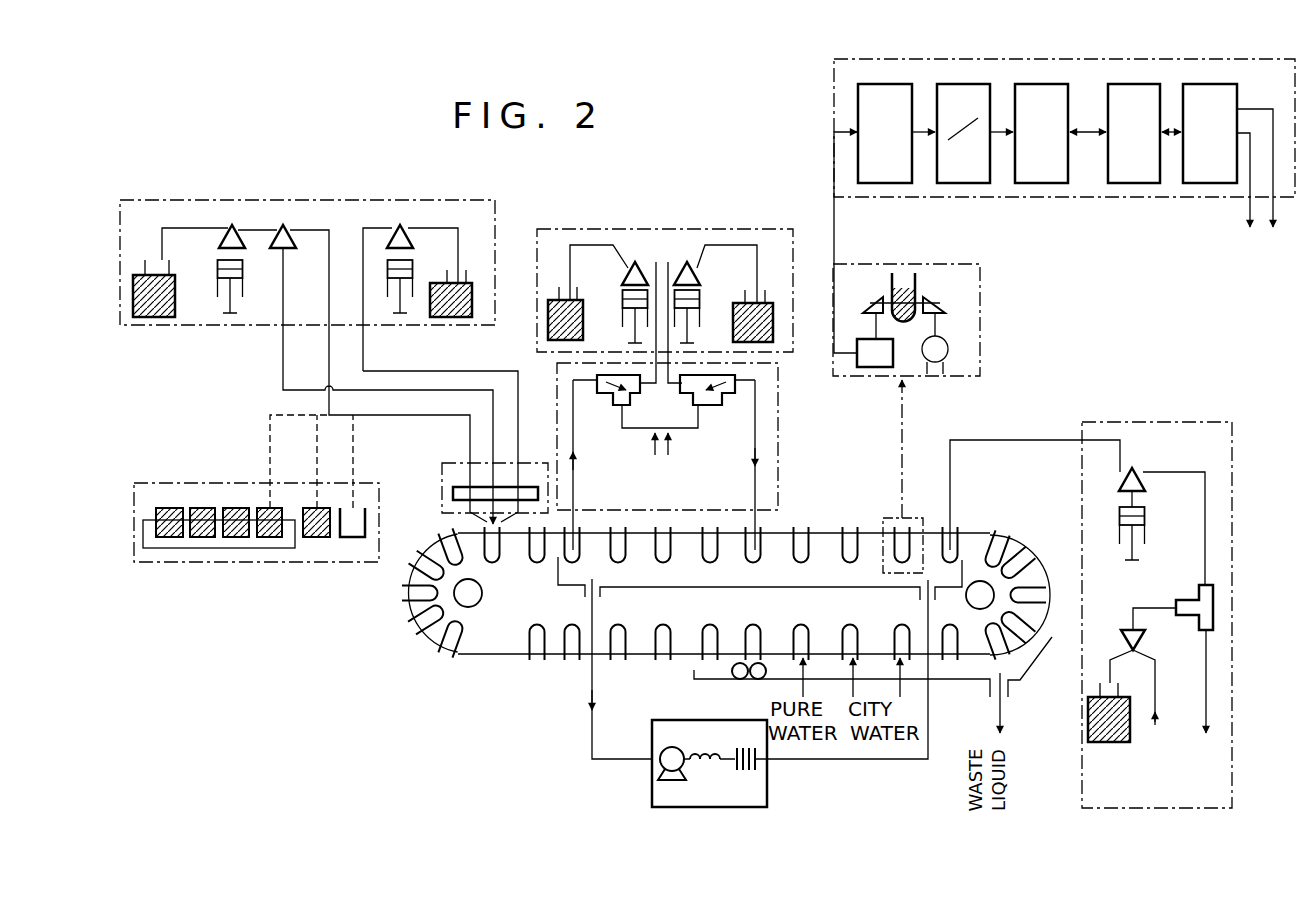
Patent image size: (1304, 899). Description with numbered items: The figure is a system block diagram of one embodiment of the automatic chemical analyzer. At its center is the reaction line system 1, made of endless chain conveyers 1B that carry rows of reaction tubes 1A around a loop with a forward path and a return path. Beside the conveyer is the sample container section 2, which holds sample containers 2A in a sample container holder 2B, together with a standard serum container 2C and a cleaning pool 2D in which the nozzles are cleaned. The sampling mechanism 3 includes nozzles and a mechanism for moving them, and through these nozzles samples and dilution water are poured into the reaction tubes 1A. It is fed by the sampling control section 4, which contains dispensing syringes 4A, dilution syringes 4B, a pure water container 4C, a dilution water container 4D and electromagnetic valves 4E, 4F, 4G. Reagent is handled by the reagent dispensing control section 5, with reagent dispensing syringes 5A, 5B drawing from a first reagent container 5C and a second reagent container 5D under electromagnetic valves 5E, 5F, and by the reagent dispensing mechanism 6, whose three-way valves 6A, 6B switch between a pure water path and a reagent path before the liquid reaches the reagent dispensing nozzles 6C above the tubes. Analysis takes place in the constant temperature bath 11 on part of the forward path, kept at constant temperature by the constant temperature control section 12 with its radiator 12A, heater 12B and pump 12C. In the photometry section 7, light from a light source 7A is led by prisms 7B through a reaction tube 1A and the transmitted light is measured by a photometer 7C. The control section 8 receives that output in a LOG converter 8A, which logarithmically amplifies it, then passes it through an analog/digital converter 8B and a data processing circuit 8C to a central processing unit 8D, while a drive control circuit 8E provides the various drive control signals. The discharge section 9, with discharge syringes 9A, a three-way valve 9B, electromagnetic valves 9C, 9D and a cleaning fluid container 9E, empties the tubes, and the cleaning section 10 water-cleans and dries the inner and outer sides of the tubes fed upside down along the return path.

The reaction line system 1 is at (400, 640).
The reaction tubes 1A is at (492, 559).
The endless chain conveyers 1B is at (456, 660).
The sample container section 2 is at (220, 563).
The sample containers 2A is at (263, 549).
The sample container holder 2B is at (184, 549).
The standard serum container 2C is at (318, 549).
The cleaning pool 2D is at (355, 549).
The sampling mechanism 3 is at (540, 462).
The sampling control section 4 is at (190, 200).
The dispensing syringes 4A is at (243, 275).
The dilution syringes 4B is at (413, 272).
The pure water container 4C is at (165, 281).
The dilution water container 4D is at (458, 280).
The electromagnetic valve 4E is at (231, 223).
The electromagnetic valve 4F is at (286, 233).
The electromagnetic valve 4G is at (405, 233).
The reagent dispensing control section 5 is at (580, 228).
The reagent dispensing syringe 5A is at (623, 311).
The reagent dispensing syringe 5B is at (700, 316).
The first reagent container 5C is at (572, 296).
The second reagent container 5D is at (757, 300).
The electromagnetic valve 5E is at (634, 259).
The electromagnetic valve 5F is at (687, 259).
The reagent dispensing mechanism 6 is at (780, 432).
The three-way valve 6A is at (608, 396).
The three-way valve 6B is at (711, 396).
The reagent dispensing nozzles 6C is at (574, 487).
The photometry section 7 is at (983, 306).
The light source 7A is at (946, 351).
The prisms 7B is at (868, 306).
The photometer 7C is at (857, 346).
The control section 8 is at (834, 115).
The LOG converter 8A is at (885, 122).
The analog/digital converter 8B is at (963, 122).
The data processing circuit 8C is at (1041, 122).
The central processing unit 8D is at (1134, 122).
The drive control circuit 8E is at (1210, 122).
The discharge section 9 is at (1235, 478).
The discharge syringes 9A is at (1144, 528).
The three-way valve 9B is at (1178, 600).
The electromagnetic valve 9C is at (1134, 470).
The electromagnetic valve 9D is at (1126, 633).
The cleaning fluid container 9E is at (1110, 742).
The cleaning section 10 is at (746, 690).
The constant temperature bath 11 is at (757, 589).
The constant temperature control section 12 is at (770, 791).
The radiator 12A is at (745, 772).
The heater 12B is at (704, 755).
The pump 12C is at (658, 779).